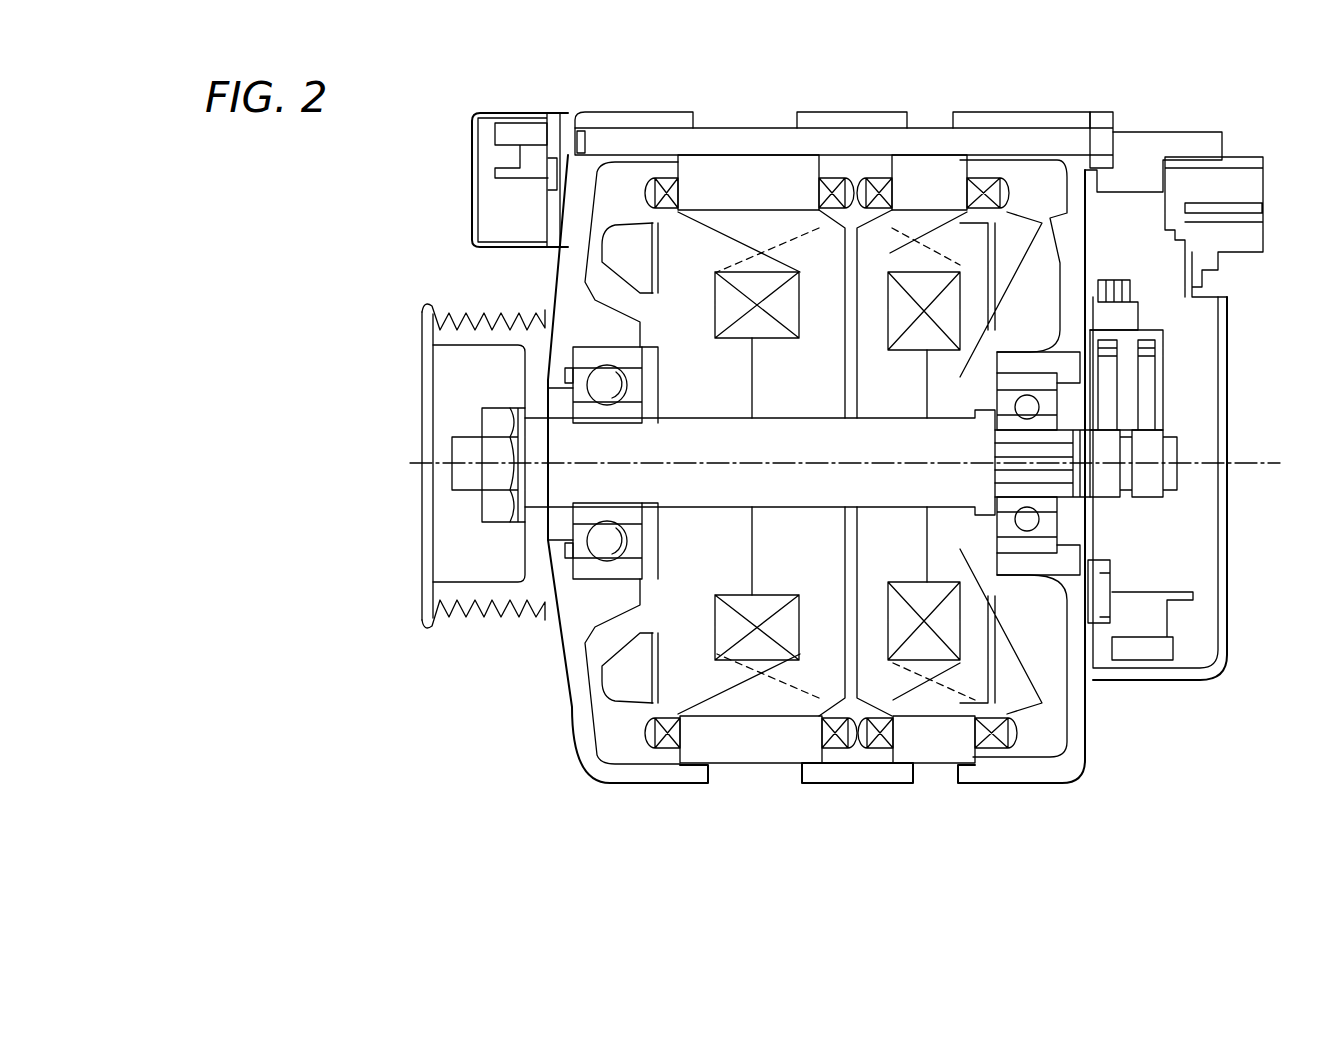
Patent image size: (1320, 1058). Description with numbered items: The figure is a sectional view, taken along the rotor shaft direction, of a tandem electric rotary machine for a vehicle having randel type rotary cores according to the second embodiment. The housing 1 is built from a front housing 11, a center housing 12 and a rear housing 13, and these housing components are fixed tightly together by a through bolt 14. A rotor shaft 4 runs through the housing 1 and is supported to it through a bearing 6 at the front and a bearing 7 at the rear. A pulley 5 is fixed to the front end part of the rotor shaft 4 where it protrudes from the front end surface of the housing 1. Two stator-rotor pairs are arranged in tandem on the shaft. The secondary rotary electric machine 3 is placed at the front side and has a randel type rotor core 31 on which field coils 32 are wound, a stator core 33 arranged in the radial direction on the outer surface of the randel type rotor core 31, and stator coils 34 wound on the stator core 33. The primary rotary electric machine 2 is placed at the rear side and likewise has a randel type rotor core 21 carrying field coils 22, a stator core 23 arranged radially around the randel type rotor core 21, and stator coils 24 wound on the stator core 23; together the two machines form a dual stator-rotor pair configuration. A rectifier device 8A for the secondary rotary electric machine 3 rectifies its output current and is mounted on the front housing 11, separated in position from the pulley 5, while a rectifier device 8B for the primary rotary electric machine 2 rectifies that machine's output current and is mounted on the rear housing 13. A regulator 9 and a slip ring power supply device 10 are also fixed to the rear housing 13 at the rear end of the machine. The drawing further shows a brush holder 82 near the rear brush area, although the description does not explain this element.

The housing 1 is at (665, 105).
The primary rotary electric machine 2 is at (949, 541).
The secondary rotary electric machine 3 is at (761, 546).
The rotor shaft 4 is at (715, 495).
The pulley 5 is at (432, 320).
The bearing 6 is at (613, 414).
The bearing 7 is at (982, 497).
The rectifier device for the secondary rotary electric machine 8A is at (497, 152).
The rectifier device for the primary rotary electric machine 8B is at (1205, 620).
The regulator 9 is at (1133, 255).
The slip ring power supply device 10 is at (1205, 352).
The front housing 11 is at (584, 760).
The center housing 12 is at (835, 776).
The rear housing 13 is at (1060, 776).
The through bolt 14 is at (853, 135).
The randel type rotor core 21 is at (888, 552).
The field coil 22 is at (910, 333).
The stator core 23 is at (930, 180).
The stator coil 24 is at (878, 750).
The randel type rotor core 31 is at (795, 552).
The field coil 32 is at (740, 328).
The stator core 33 is at (748, 178).
The stator coil 34 is at (666, 750).
The brush holder 82 is at (1107, 585).